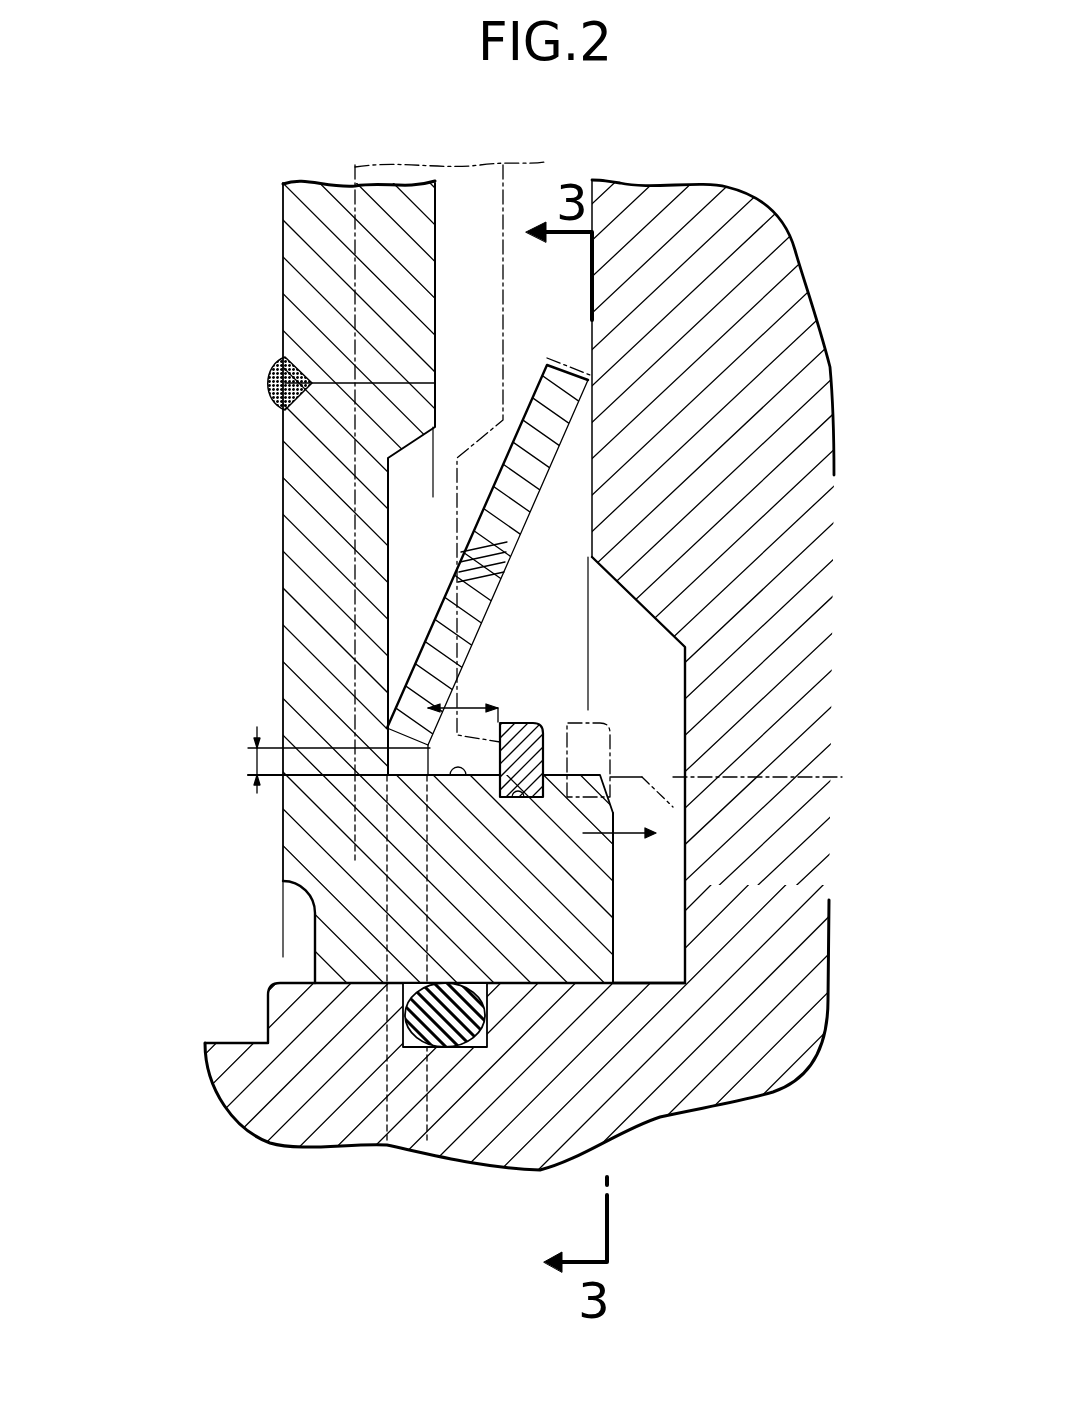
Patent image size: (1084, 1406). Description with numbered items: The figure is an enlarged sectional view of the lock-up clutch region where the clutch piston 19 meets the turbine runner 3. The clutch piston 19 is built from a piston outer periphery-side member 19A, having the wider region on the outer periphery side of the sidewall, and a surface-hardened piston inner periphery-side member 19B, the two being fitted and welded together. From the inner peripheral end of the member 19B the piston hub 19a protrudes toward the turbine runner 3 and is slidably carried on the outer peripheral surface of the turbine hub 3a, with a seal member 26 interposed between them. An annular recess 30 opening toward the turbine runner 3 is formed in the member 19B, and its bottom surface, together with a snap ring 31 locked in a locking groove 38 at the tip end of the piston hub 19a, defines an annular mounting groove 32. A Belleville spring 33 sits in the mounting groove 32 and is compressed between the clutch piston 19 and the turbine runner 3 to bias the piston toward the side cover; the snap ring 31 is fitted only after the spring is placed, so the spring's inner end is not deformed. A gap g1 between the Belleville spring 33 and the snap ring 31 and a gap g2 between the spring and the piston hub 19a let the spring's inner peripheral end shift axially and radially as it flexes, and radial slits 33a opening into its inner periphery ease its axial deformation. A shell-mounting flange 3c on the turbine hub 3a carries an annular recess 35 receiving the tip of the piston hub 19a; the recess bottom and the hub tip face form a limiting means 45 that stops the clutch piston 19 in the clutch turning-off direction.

The turbine runner 3 is at (814, 290).
The shell-mounting flange 3c is at (660, 215).
The turbine hub 3a is at (286, 1103).
The clutch piston 19 is at (505, 262).
The piston outer periphery-side member 19A is at (300, 292).
The piston inner periphery-side member 19B is at (295, 518).
The piston hub 19a is at (575, 1038).
The seal member 26 is at (450, 1030).
The annular recess 30 is at (404, 596).
The snap ring 31 is at (528, 721).
The mounting groove 32 is at (458, 770).
The Belleville spring 33 is at (560, 450).
The slits 33a is at (458, 570).
The annular recess 35 is at (685, 735).
The locking groove 38 is at (527, 797).
The limiting means 45 is at (630, 955).
The gap g1 is at (473, 706).
The gap g2 is at (321, 760).